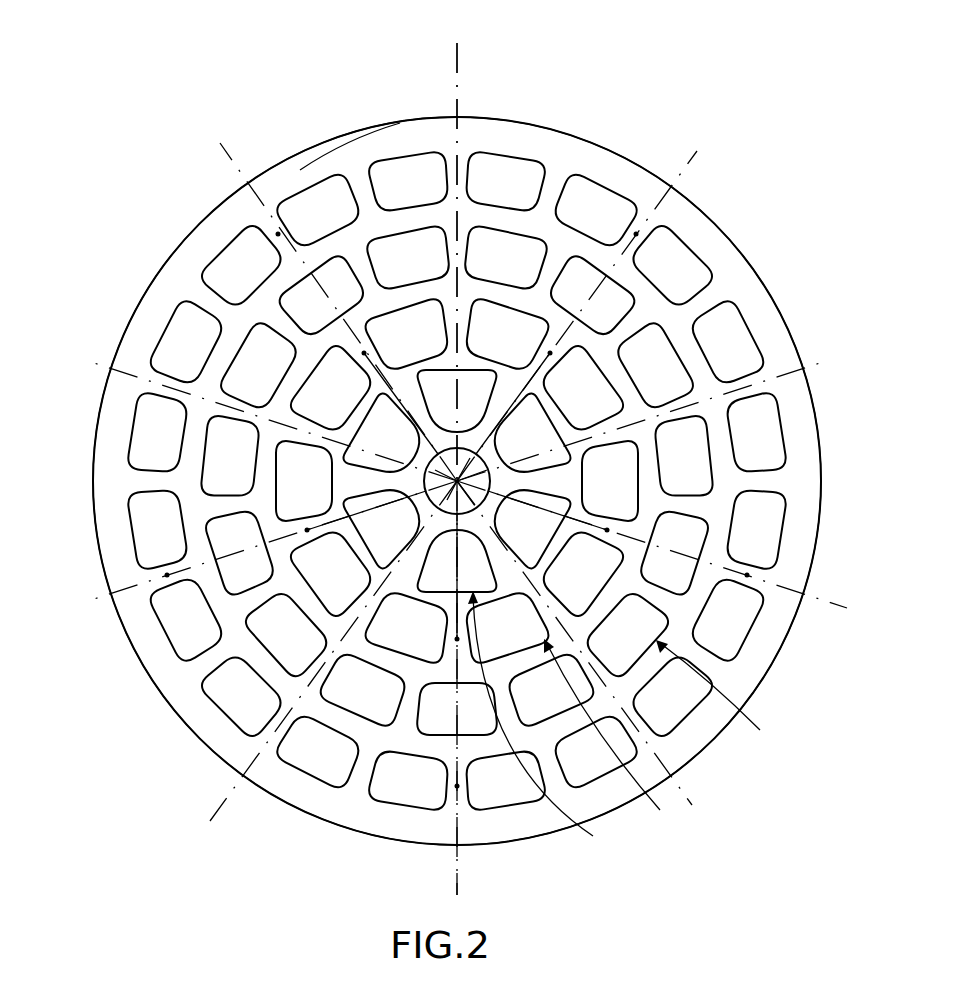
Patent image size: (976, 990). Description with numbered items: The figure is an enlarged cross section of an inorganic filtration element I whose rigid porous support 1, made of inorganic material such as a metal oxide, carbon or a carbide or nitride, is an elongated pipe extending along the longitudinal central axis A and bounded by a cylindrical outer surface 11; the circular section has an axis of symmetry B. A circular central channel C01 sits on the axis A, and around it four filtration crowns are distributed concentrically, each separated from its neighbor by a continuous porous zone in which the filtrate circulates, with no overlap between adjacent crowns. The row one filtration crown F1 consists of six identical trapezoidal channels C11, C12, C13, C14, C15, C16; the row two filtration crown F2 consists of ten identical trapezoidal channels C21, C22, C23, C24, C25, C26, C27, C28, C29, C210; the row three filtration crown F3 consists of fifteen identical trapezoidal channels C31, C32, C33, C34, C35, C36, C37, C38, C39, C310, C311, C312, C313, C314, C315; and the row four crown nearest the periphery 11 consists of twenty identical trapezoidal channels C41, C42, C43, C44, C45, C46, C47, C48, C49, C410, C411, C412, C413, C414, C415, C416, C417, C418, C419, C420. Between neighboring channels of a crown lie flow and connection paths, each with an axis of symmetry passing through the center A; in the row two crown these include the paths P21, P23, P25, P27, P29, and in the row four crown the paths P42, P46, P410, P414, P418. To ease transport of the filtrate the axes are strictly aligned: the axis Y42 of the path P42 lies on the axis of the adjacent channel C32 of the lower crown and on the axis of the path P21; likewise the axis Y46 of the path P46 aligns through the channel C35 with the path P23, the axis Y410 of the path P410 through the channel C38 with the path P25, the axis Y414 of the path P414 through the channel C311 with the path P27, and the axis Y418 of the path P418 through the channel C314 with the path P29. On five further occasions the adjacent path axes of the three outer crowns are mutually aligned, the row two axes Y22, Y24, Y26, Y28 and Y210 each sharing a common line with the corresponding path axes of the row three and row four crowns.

The rigid porous support 1 is at (295, 166).
The cylindrical outer surface 11 is at (348, 135).
The inorganic filtration element I is at (621, 86).
The longitudinal central axis A is at (456, 483).
The axis of symmetry B is at (468, 469).
The central channel C01 is at (457, 481).
The channel C11 is at (387, 440).
The channel C12 is at (457, 401).
The channel C13 is at (526, 440).
The channel C14 is at (526, 520).
The channel C15 is at (457, 561).
The channel C16 is at (387, 520).
The channel C21 is at (333, 390).
The channel C22 is at (409, 336).
The channel C23 is at (504, 336).
The channel C24 is at (581, 390).
The channel C25 is at (610, 481).
The channel C26 is at (581, 570).
The channel C27 is at (504, 627).
The channel C28 is at (409, 627).
The channel C29 is at (333, 570).
The channel C210 is at (304, 481).
The channel C31 is at (259, 367).
The channel C32 is at (322, 296).
The channel C33 is at (409, 257).
The channel C34 is at (504, 257).
The channel C35 is at (591, 296).
The channel C36 is at (654, 367).
The channel C37 is at (684, 457).
The channel C38 is at (674, 552).
The channel C39 is at (626, 634).
The channel C310 is at (550, 689).
The channel C311 is at (457, 709).
The channel C312 is at (364, 689).
The channel C313 is at (288, 634).
The channel C314 is at (240, 552).
The channel C315 is at (230, 457).
The channel C41 is at (187, 343).
The channel C42 is at (242, 266).
The channel C43 is at (319, 211).
The channel C44 is at (409, 182).
The channel C45 is at (504, 182).
The channel C46 is at (595, 211).
The channel C47 is at (671, 266).
The channel C48 is at (727, 343).
The channel C49 is at (756, 433).
The channel C410 is at (756, 528).
The channel C411 is at (727, 619).
The channel C412 is at (671, 695).
The channel C413 is at (595, 751).
The channel C414 is at (504, 780).
The channel C415 is at (409, 780).
The channel C416 is at (319, 751).
The channel C417 is at (242, 695).
The channel C418 is at (187, 619).
The channel C419 is at (158, 528).
The channel C420 is at (158, 433).
The flow and connection path P21 is at (364, 353).
The flow and connection path P23 is at (550, 353).
The flow and connection path P25 is at (607, 530).
The flow and connection path P27 is at (457, 639).
The flow and connection path P29 is at (307, 530).
The flow and connection path P42 is at (278, 234).
The flow and connection path P46 is at (636, 234).
The flow and connection path P410 is at (747, 575).
The flow and connection path P414 is at (457, 786).
The flow and connection path P418 is at (167, 575).
The axis of symmetry Y22 is at (457, 57).
The axis of symmetry Y46 is at (703, 146).
The axis of symmetry Y24 is at (841, 358).
The axis of symmetry Y410 is at (847, 608).
The axis of symmetry Y26 is at (692, 805).
The axis of symmetry Y414 is at (457, 878).
The axis of symmetry Y28 is at (205, 825).
The axis of symmetry Y418 is at (97, 602).
The axis of symmetry Y210 is at (77, 353).
The axis of symmetry Y42 is at (220, 143).
The row one filtration crown F1 is at (542, 724).
The row two filtration crown F2 is at (613, 734).
The row three filtration crown F3 is at (719, 696).